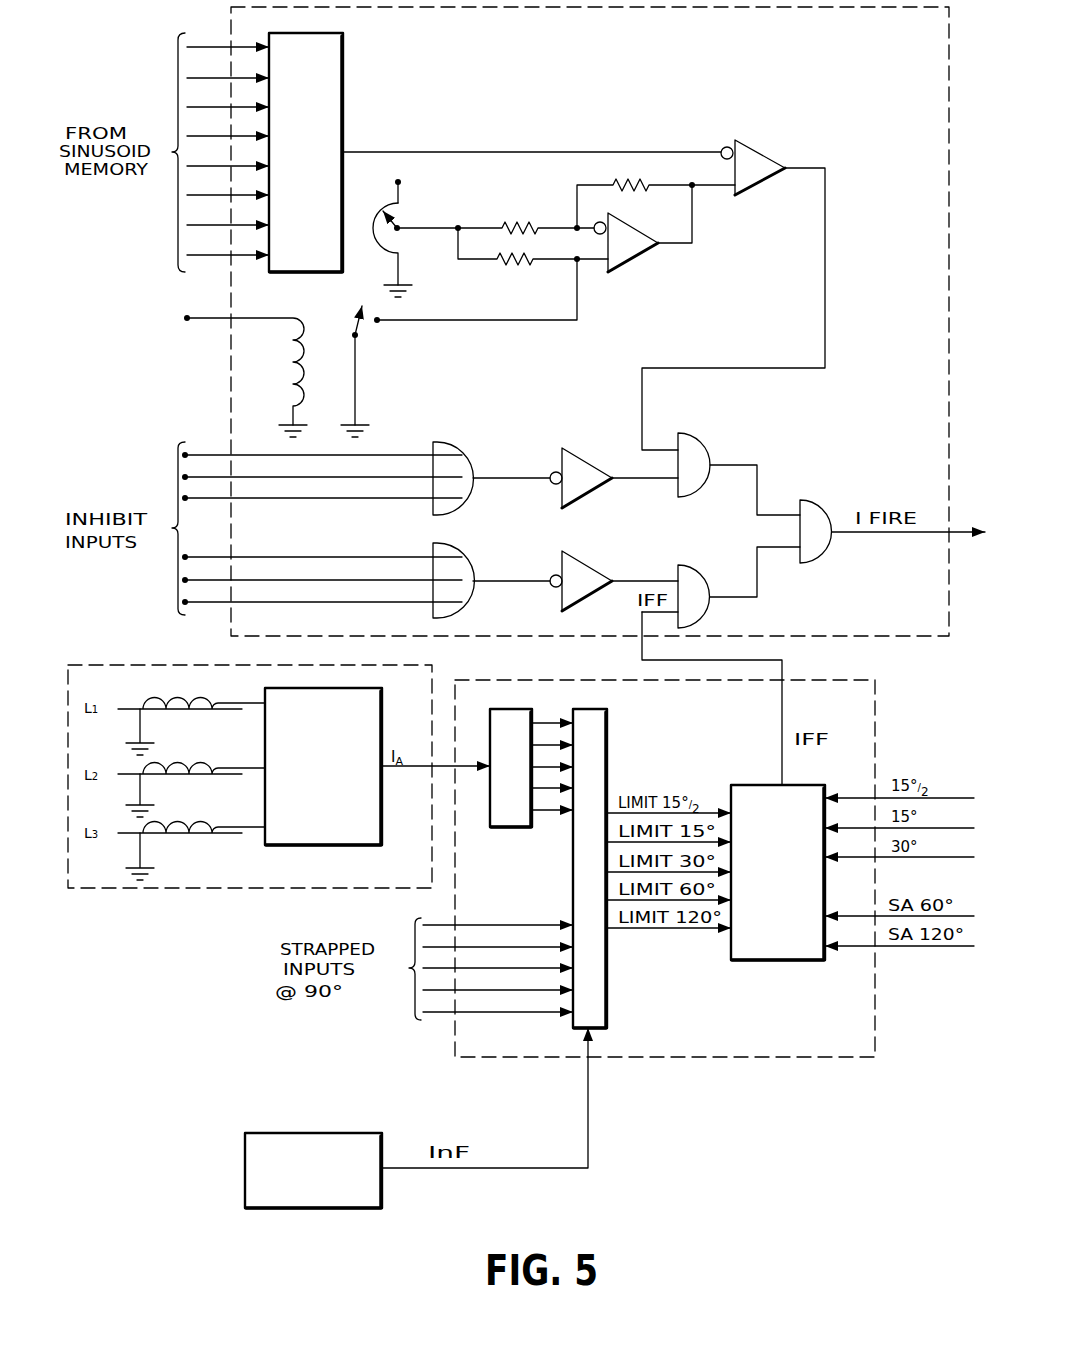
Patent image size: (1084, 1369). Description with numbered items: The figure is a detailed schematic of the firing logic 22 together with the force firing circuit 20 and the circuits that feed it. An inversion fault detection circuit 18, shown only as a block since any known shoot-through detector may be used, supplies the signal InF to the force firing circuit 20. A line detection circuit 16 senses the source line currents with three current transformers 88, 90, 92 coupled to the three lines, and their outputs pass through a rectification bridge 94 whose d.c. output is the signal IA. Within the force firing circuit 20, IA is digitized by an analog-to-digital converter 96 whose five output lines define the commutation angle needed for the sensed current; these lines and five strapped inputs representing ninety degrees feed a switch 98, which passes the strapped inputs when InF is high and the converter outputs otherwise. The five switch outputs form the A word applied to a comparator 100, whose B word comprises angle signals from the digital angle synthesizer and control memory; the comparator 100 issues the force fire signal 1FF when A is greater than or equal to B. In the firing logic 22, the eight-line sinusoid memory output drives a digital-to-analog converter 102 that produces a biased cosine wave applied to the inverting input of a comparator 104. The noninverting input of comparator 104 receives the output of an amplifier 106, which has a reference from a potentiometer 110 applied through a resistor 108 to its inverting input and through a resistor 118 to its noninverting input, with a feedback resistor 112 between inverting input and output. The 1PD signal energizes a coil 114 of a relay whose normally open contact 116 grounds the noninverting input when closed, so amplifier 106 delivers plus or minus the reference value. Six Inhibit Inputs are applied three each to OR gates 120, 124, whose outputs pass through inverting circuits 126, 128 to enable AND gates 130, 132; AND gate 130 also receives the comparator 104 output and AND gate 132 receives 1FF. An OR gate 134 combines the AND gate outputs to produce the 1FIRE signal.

The firing logic 22 is at (231, 8).
The digital-to-analog converter 102 is at (345, 72).
The comparator 104 is at (752, 147).
The amplifier 106 is at (636, 263).
The resistor 108 is at (520, 219).
The potentiometer 110 is at (400, 214).
The feedback resistor 112 is at (640, 197).
The relay coil 114 is at (289, 377).
The normally open contact 116 is at (367, 330).
The resistor 118 is at (522, 268).
The OR gate 120 is at (466, 449).
The OR gate 124 is at (466, 553).
The inverting circuit 126 is at (592, 463).
The inverting circuit 128 is at (590, 566).
The AND gate 130 is at (707, 445).
The AND gate 132 is at (705, 577).
The OR gate 134 is at (823, 510).
The line detection circuit 16 is at (173, 888).
The current transformer 88 is at (205, 712).
The current transformer 90 is at (208, 778).
The current transformer 92 is at (185, 838).
The rectification bridge 94 is at (330, 846).
The analog-to-digital converter 96 is at (529, 828).
The switch 98 is at (608, 730).
The comparator 100 is at (762, 961).
The force firing circuit 20 is at (842, 1058).
The inversion fault detection circuit 18 is at (358, 1132).